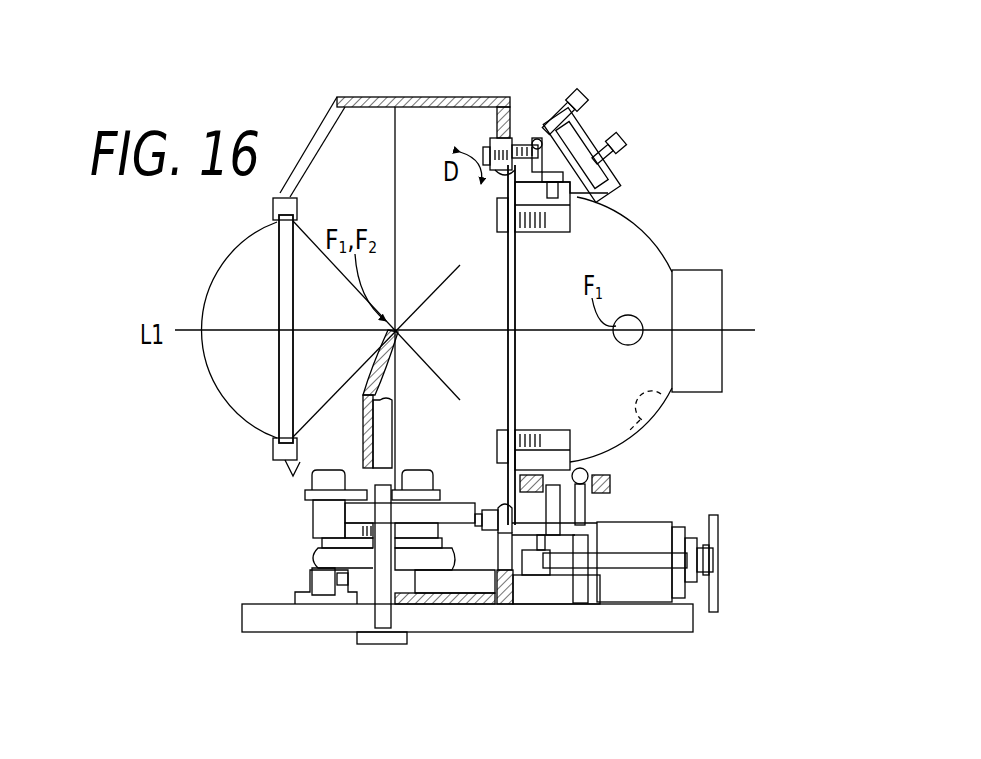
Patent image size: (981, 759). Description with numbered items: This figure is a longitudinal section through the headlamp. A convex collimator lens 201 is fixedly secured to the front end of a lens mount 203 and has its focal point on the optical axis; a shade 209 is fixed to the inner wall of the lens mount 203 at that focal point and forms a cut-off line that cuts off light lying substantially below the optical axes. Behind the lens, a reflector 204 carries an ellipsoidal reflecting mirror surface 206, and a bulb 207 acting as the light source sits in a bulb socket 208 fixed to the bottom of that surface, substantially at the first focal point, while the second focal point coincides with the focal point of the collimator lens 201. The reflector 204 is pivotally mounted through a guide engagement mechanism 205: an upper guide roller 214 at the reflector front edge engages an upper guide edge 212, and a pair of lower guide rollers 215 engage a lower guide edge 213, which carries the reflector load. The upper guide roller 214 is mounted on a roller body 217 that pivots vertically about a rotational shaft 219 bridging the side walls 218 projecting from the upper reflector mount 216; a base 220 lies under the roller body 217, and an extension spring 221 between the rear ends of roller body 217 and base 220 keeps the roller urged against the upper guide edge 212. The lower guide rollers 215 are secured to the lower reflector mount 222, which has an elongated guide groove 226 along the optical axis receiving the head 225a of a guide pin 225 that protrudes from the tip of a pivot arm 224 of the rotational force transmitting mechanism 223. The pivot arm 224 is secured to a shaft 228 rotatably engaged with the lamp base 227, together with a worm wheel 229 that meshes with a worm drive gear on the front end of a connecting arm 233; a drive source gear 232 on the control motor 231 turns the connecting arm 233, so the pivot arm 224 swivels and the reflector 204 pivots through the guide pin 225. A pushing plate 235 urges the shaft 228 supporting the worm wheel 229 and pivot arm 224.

The collimator lens 201 is at (227, 296).
The lens mount 203 is at (372, 97).
The reflector 204 is at (610, 227).
The guide engagement mechanism 205 is at (471, 540).
The ellipsoidal reflecting mirror surface 206 is at (665, 414).
The bulb 207 is at (630, 315).
The bulb socket 208 is at (720, 272).
The shade 209 is at (398, 366).
The upper guide edge 212 is at (497, 130).
The lower guide edge 213 is at (522, 583).
The upper guide roller 214 is at (520, 137).
The lower guide rollers 215 is at (503, 525).
The upper reflector mount 216 is at (570, 207).
The roller body 217 is at (588, 122).
The side walls 218 is at (628, 146).
The rotational shaft 219 is at (534, 131).
The base 220 is at (600, 187).
The extension spring 221 is at (600, 133).
The lower reflector mount 222 is at (540, 440).
The rotational force transmitting mechanism 223 is at (729, 537).
The pivot arm 224 is at (450, 513).
The guide pin 225 is at (583, 517).
The head of the guide pin 225a is at (584, 468).
The elongated guide groove 226 is at (528, 496).
The lamp base 227 is at (667, 623).
The shaft 228 is at (310, 580).
The worm wheel 229 is at (330, 555).
The control motor 231 is at (657, 530).
The drive source gear 232 is at (702, 583).
The connecting arm 233 is at (623, 563).
The pushing plate 235 is at (305, 497).